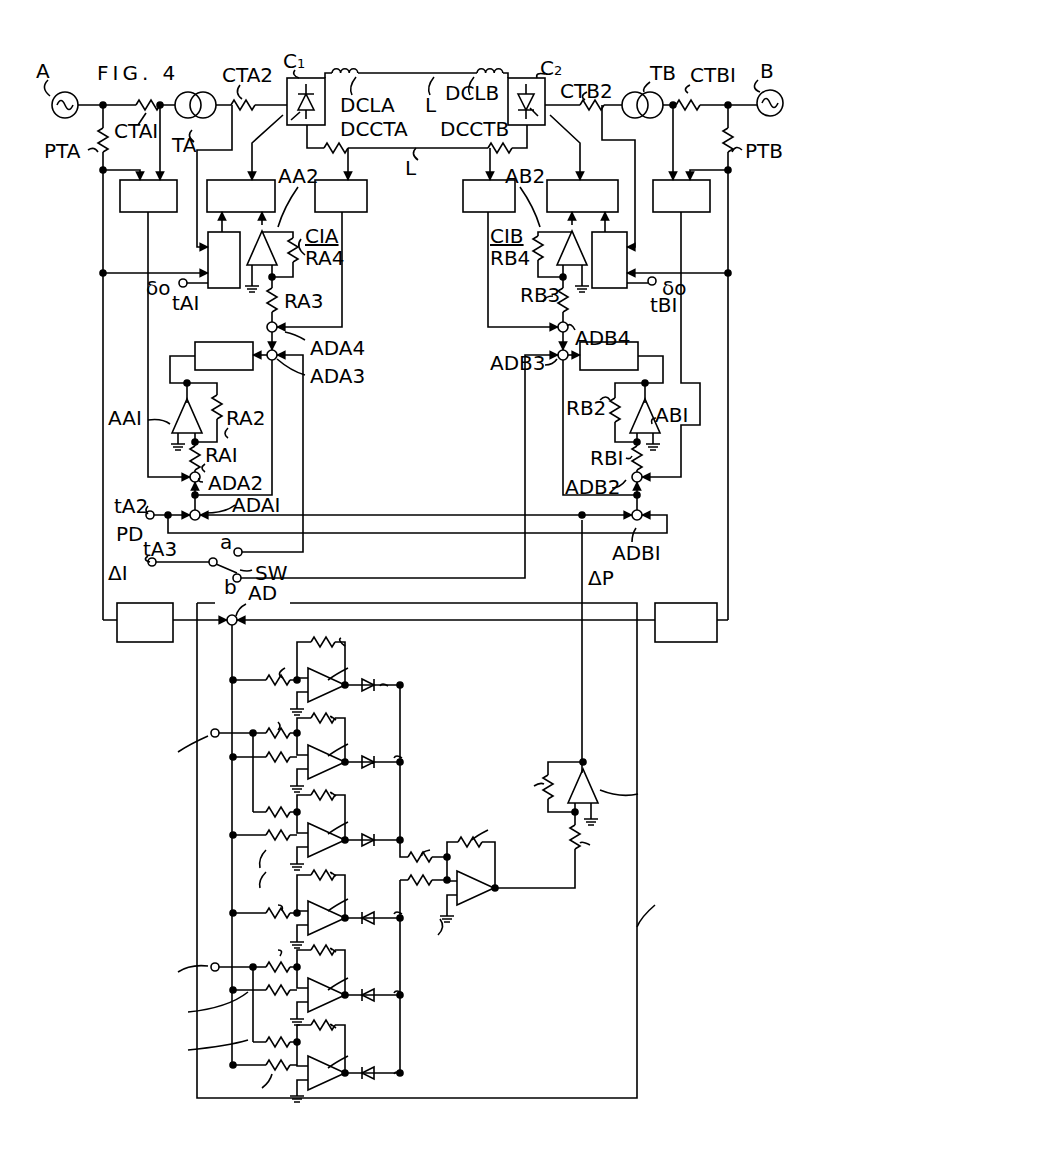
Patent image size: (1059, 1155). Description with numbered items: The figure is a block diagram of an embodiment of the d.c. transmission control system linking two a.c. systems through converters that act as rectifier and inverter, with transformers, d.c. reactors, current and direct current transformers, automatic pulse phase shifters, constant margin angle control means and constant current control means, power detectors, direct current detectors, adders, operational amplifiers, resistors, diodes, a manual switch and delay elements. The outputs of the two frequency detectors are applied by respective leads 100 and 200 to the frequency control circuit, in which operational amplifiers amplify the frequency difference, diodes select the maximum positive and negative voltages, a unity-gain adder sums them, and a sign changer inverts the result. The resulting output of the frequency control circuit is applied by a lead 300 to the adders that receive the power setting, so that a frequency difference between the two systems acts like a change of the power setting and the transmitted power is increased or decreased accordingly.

The lead 100 is at (185, 585).
The lead 200 is at (614, 624).
The lead 300 is at (577, 558).